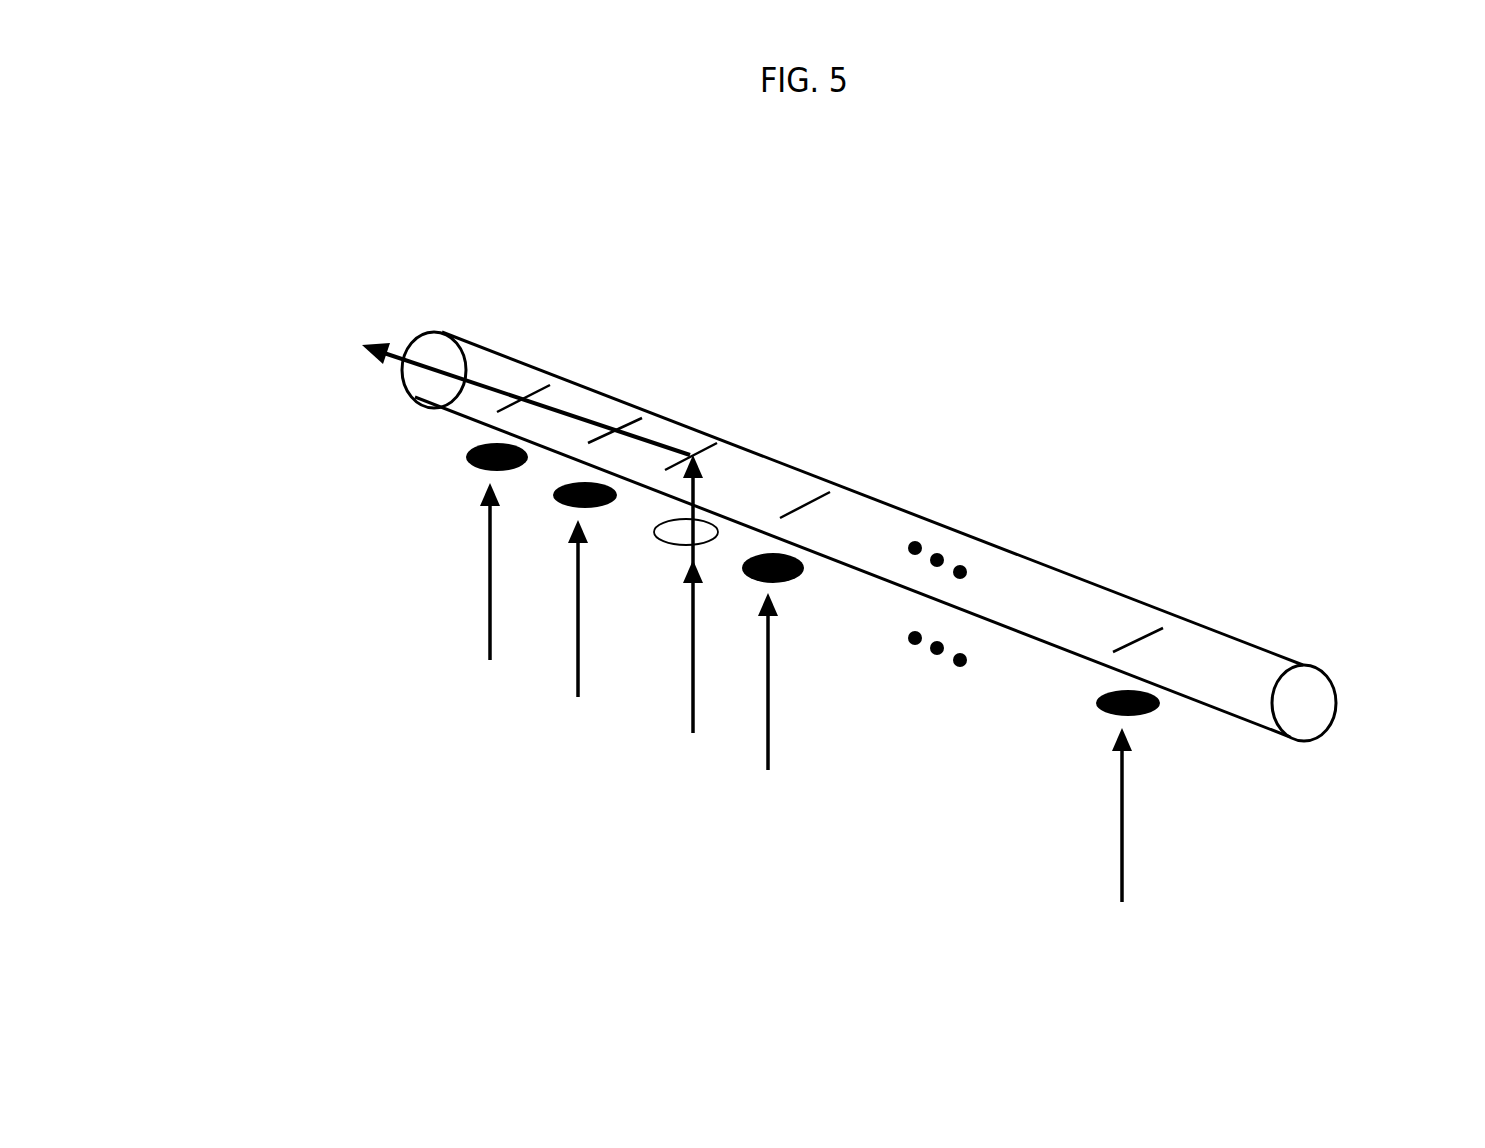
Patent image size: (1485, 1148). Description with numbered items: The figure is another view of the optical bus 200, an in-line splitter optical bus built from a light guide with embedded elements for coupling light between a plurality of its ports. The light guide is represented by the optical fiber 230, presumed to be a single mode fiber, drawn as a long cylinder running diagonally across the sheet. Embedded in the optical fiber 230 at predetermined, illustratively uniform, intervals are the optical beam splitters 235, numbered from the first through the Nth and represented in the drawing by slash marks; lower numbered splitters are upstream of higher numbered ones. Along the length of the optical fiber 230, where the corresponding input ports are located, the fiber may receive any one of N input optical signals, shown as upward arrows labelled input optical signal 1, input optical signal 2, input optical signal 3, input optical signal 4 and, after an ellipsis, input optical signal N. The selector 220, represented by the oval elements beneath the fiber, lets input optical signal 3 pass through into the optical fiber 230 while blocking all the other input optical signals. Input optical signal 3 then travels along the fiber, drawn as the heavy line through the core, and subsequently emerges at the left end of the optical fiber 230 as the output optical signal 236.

The optical bus 200 is at (410, 136).
The selector 220 is at (1160, 715).
The optical fiber 230 is at (1290, 638).
The optical beam splitters 235 is at (830, 456).
The output optical signal 236 is at (434, 373).
The input optical signal 1 is at (490, 597).
The input optical signal 2 is at (578, 635).
The input optical signal 3 is at (693, 620).
The input optical signal 4 is at (768, 708).
The input optical signal N is at (1123, 843).